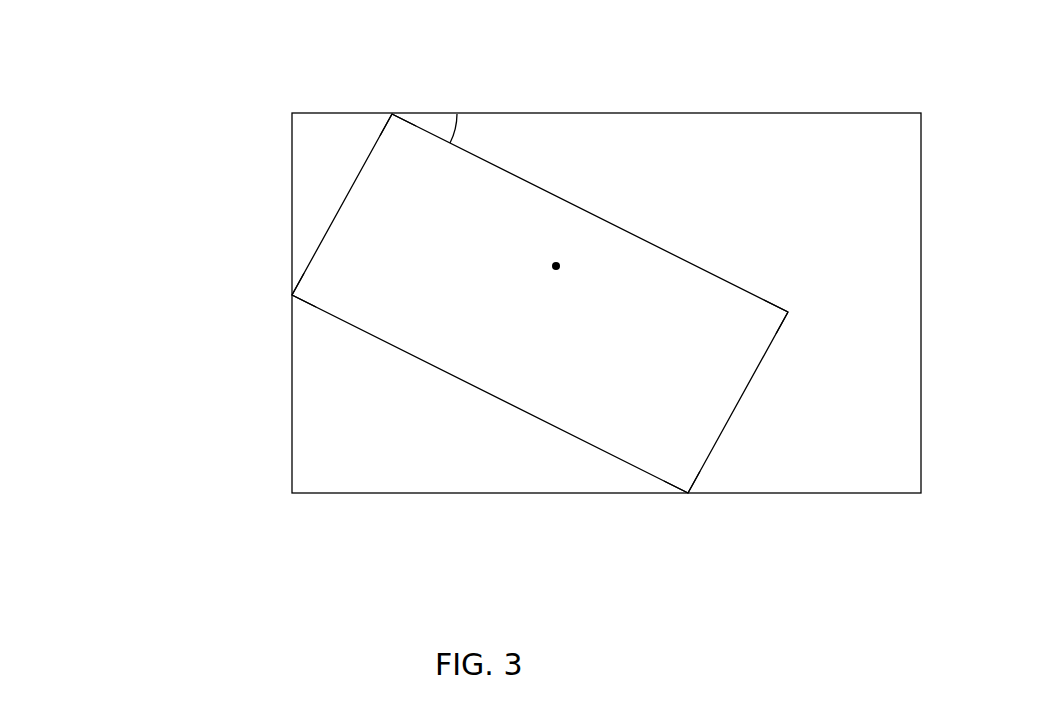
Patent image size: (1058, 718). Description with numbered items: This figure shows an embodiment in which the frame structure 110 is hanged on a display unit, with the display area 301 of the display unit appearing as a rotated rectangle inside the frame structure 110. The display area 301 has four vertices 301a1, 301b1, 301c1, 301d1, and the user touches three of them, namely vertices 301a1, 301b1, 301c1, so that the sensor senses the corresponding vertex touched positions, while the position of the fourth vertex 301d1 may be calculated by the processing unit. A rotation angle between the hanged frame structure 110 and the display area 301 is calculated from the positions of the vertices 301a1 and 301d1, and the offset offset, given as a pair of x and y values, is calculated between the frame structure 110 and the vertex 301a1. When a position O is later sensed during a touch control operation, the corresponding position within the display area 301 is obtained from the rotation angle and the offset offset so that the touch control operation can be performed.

The frame structure 110 is at (292, 163).
The display area 301 is at (512, 375).
The vertex 301a1 is at (392, 114).
The vertex 301b1 is at (292, 295).
The vertex 301c1 is at (688, 493).
The vertex 301d1 is at (788, 312).
The position O is at (556, 262).
The element offset is at (353, 95).